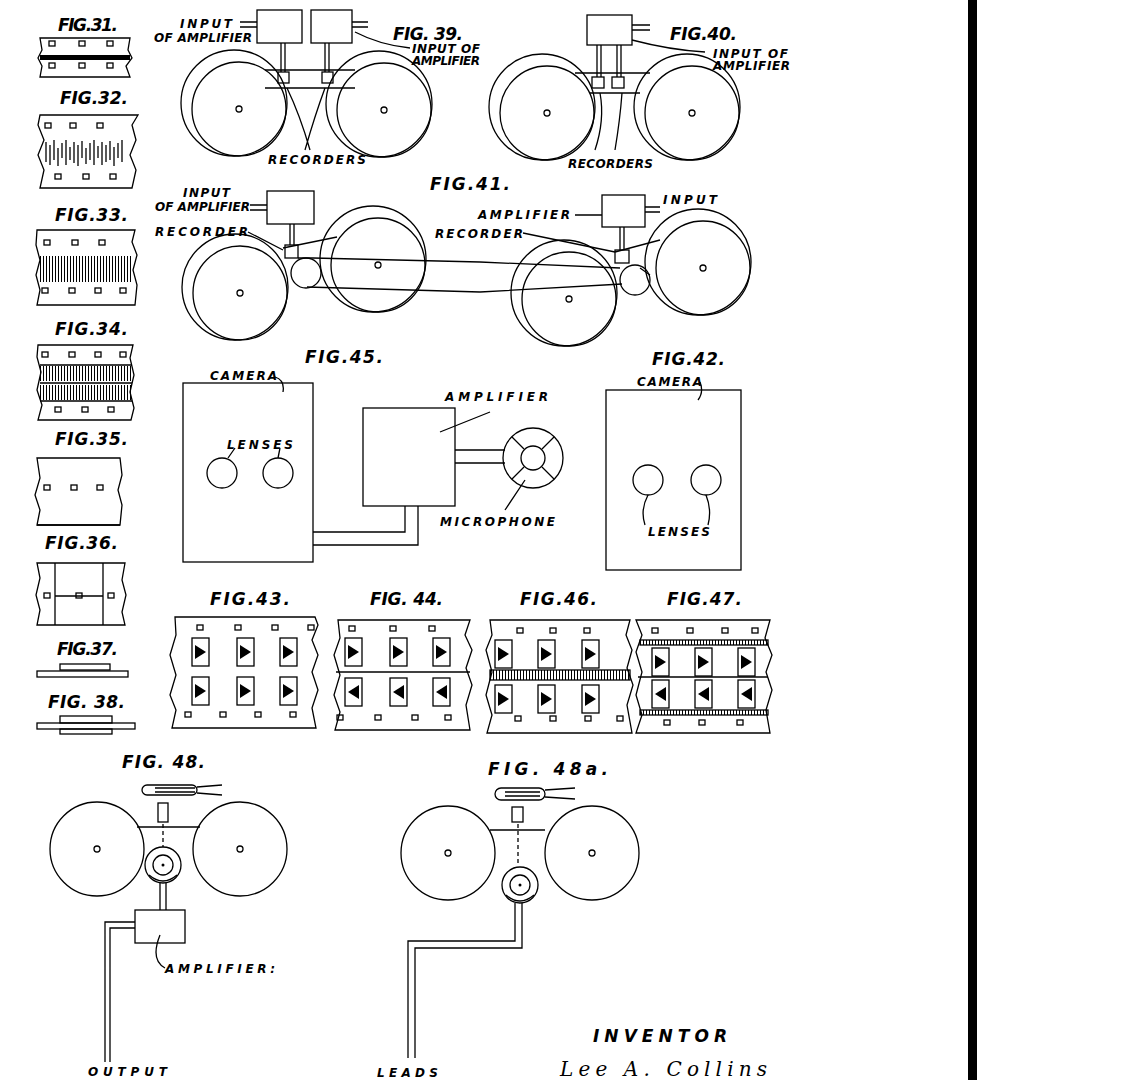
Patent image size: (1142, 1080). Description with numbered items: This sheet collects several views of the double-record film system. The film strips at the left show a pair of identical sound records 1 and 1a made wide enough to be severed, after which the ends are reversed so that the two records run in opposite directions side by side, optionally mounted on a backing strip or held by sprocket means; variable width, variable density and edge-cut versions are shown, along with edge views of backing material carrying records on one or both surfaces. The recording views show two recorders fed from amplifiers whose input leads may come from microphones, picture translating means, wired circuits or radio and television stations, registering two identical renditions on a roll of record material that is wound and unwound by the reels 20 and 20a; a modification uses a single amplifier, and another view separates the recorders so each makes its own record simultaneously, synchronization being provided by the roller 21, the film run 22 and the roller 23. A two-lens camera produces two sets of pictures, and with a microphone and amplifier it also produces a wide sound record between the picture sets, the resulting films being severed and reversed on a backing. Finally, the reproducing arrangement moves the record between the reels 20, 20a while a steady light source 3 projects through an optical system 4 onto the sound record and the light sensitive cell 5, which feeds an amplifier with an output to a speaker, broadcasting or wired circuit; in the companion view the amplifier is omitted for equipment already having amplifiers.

In FIG. 31, the sound record 1 is at (38, 58).
In FIG. 32, the sound record 1 is at (44, 156).
In FIG. 33, the sound record 1 is at (38, 272).
In FIG. 34, the sound record 1 is at (40, 373).
In FIG. 35, the sound record 1 is at (40, 461).
In FIG. 36, the sound record 1 is at (50, 565).
In FIG. 46, the sound record 1 is at (495, 676).
In FIG. 47, the sound record 1 is at (642, 642).
In FIG. 34, the sound record 1a is at (133, 390).
In FIG. 35, the sound record 1a is at (36, 522).
In FIG. 47, the sound record 1a is at (760, 713).
In FIG. 48, the steady light source 3 is at (198, 782).
In FIG. 48A, the steady light source 3 is at (495, 792).
In FIG. 48, the optical system 4 is at (170, 812).
In FIG. 48A, the optical system 4 is at (525, 814).
In FIG. 48, the light sensitive cell 5 is at (175, 878).
In FIG. 48A, the light sensitive cell 5 is at (530, 898).
In FIG. 39, the reel 20 is at (208, 134).
In FIG. 40, the reel 20 is at (533, 148).
In FIG. 41, the reel 20 is at (210, 318).
In FIG. 48, the reel 20 is at (75, 890).
In FIG. 48A, the reel 20 is at (440, 895).
In FIG. 39, the reel 20a is at (399, 147).
In FIG. 40, the reel 20a is at (690, 158).
In FIG. 41, the reel 20a is at (362, 303).
In FIG. 48, the reel 20a is at (256, 900).
In FIG. 48A, the reel 20a is at (618, 903).
In FIG. 41, the synchronizing roller 21 is at (305, 290).
In FIG. 41, the synchronizing film run 22 is at (462, 292).
In FIG. 41, the synchronizing roller 23 is at (640, 294).